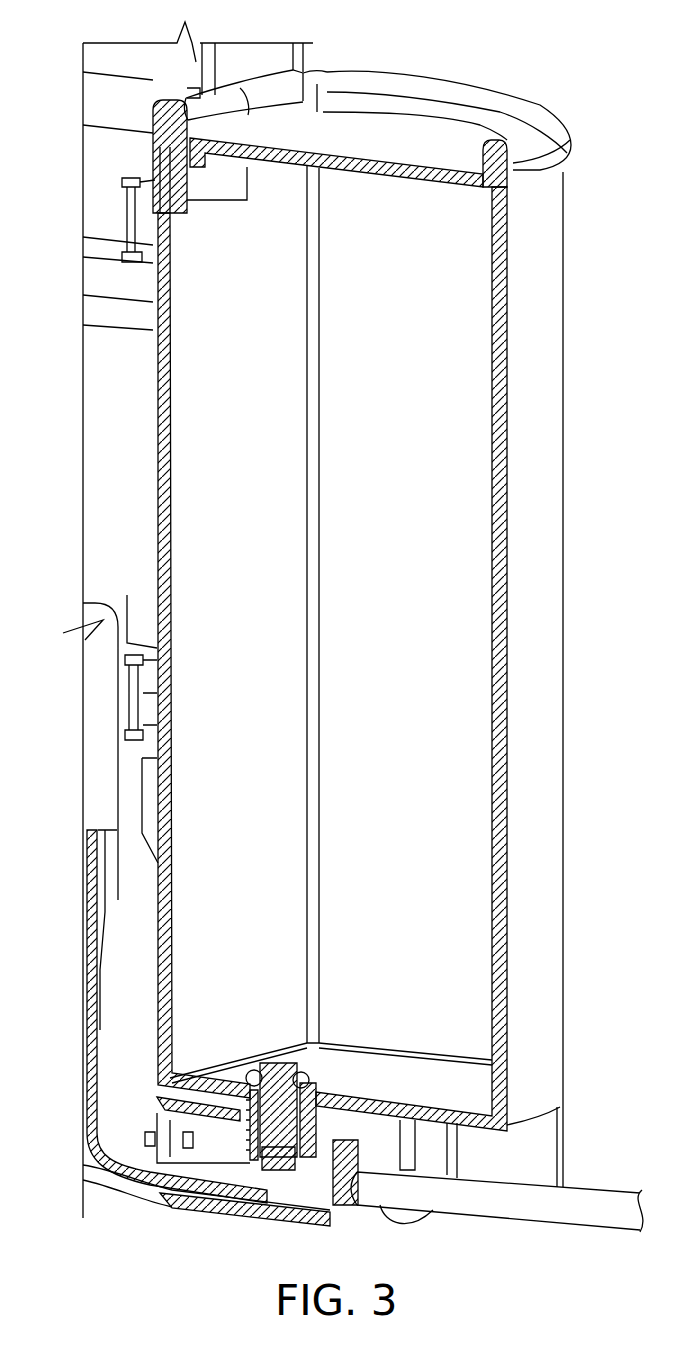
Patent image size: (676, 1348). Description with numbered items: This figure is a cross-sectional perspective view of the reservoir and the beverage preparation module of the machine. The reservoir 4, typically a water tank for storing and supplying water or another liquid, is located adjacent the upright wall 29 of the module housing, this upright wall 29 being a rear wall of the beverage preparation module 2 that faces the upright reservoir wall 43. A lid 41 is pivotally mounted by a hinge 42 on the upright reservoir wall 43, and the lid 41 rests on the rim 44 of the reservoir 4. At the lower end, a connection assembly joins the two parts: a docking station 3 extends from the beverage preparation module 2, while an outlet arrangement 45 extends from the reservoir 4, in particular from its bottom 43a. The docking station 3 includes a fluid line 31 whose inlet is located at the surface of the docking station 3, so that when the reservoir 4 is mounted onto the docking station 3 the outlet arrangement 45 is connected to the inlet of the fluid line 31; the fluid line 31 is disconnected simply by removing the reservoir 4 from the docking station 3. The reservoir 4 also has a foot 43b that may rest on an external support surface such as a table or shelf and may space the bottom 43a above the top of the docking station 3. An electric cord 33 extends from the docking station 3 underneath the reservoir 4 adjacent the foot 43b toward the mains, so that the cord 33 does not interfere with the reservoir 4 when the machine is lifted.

The beverage preparation module 2 is at (102, 52).
The hinge 42 is at (187, 100).
The upright wall 29 is at (297, 72).
The lid 41 is at (447, 130).
The rim 44 is at (563, 170).
The reservoir 4 is at (553, 313).
The upright reservoir wall 43 is at (283, 279).
The bottom 43a is at (329, 1063).
The foot 43b is at (547, 1137).
The outlet arrangement 45 is at (280, 1012).
The fluid line 31 is at (183, 1180).
The docking station 3 is at (275, 1222).
The cord 33 is at (487, 1210).